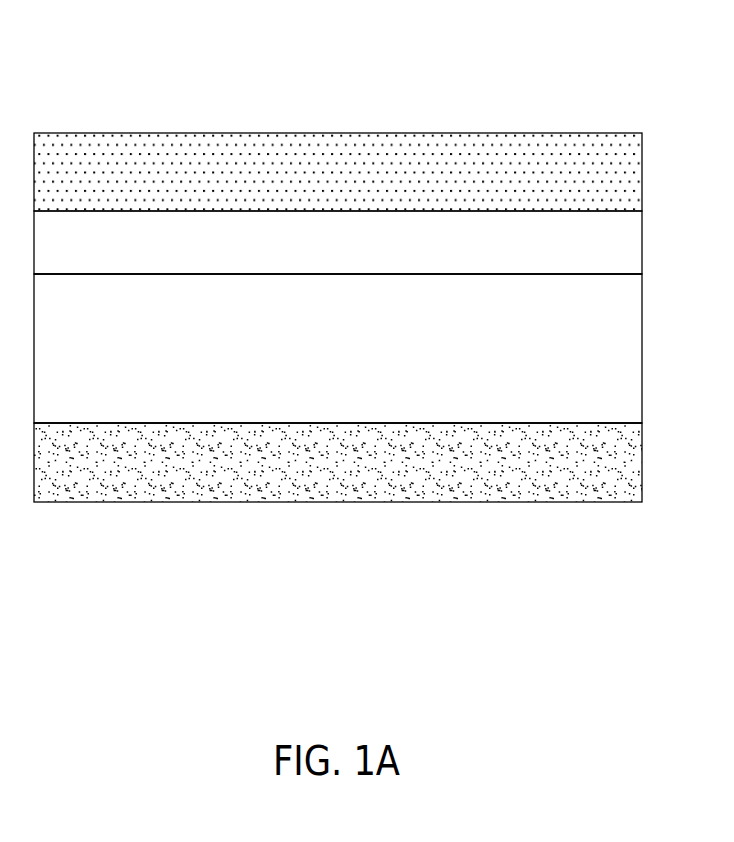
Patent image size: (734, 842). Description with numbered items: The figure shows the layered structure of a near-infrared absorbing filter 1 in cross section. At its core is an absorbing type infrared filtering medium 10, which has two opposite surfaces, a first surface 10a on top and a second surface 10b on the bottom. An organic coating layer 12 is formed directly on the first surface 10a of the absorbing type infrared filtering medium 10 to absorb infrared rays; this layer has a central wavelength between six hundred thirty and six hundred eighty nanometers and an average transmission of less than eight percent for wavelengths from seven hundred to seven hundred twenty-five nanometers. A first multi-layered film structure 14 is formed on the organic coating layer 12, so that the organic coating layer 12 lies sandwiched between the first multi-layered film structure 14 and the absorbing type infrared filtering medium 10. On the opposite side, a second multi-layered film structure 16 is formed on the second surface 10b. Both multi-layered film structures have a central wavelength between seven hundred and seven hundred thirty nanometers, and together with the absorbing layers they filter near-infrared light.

The near-infrared absorbing filter 1 is at (631, 88).
The absorbing type infrared filtering medium 10 is at (605, 348).
The first surface 10a is at (608, 275).
The second surface 10b is at (608, 423).
The organic coating layer 12 is at (603, 243).
The first multi-layered film structure 14 is at (605, 171).
The second multi-layered film structure 16 is at (605, 462).